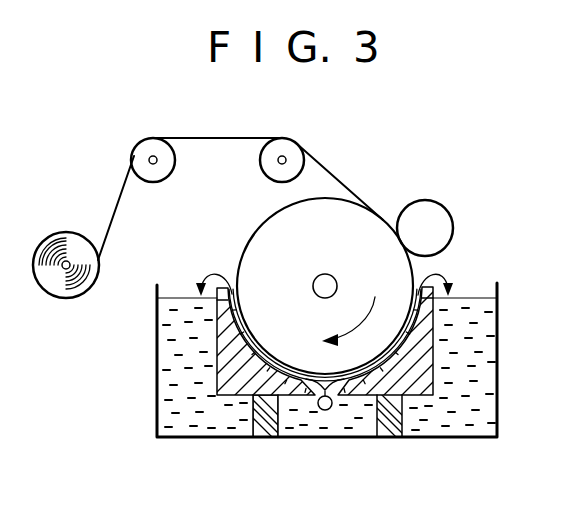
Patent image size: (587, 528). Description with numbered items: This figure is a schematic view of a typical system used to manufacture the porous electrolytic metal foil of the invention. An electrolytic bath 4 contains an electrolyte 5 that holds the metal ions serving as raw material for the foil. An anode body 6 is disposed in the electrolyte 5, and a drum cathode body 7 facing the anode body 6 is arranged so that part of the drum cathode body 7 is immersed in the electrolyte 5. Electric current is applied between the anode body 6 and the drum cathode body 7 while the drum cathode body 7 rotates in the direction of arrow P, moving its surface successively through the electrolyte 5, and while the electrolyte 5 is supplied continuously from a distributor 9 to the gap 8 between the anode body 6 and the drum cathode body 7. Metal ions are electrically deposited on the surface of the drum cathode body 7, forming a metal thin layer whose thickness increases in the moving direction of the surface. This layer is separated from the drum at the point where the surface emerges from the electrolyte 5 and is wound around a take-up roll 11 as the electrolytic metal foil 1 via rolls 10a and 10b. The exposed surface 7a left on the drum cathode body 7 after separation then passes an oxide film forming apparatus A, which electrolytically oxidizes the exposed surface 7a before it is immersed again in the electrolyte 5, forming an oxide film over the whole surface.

The electrolytic metal foil 1 is at (217, 136).
The electrolytic bath 4 is at (497, 377).
The electrolyte 5 is at (483, 333).
The anode body 6 is at (228, 382).
The drum cathode body 7 is at (368, 222).
The exposed surface 7a is at (342, 197).
The gap 8 is at (363, 396).
The distributor 9 is at (325, 411).
The roll 10a is at (153, 148).
The roll 10b is at (284, 148).
The take-up roll 11 is at (66, 233).
The oxide film forming apparatus A is at (444, 221).
The arrow p P is at (349, 325).